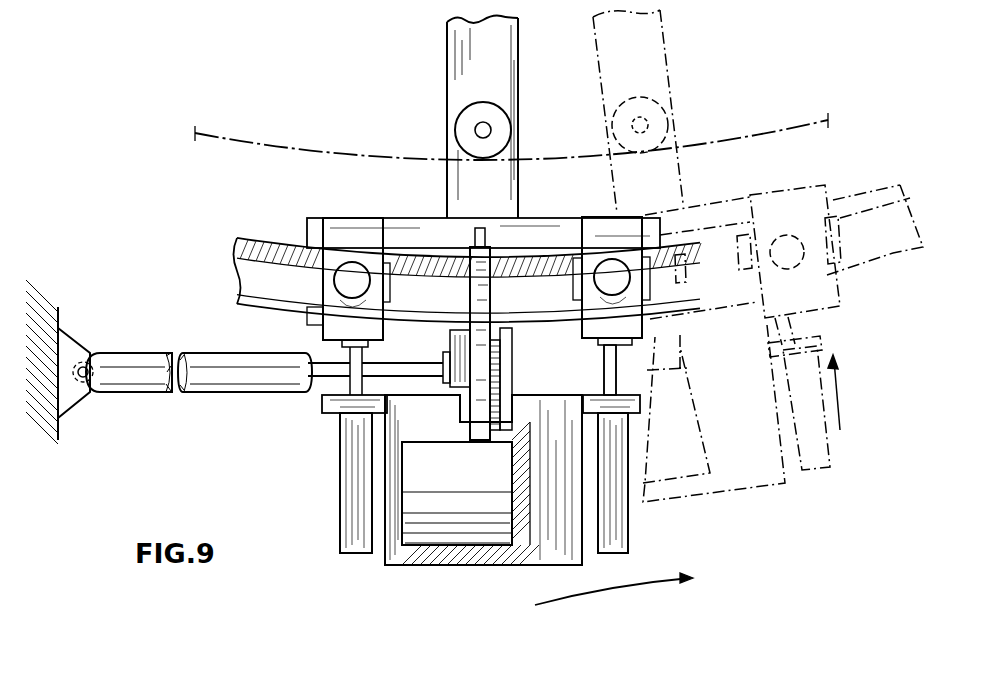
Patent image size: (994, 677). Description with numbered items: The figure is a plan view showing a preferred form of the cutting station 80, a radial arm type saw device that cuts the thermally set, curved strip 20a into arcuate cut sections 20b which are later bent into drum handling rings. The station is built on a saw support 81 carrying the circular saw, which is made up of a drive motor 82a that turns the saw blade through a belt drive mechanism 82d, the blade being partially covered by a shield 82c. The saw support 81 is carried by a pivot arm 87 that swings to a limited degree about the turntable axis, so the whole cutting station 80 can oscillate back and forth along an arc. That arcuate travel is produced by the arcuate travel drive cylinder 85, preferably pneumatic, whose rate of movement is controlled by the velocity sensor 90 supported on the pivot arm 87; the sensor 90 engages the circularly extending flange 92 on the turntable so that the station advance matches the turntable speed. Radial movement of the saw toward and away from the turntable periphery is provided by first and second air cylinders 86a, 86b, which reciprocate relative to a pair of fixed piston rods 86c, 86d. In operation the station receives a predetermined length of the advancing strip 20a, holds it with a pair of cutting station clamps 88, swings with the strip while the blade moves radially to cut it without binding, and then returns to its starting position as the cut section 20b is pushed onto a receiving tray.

The curved strip 20a is at (272, 293).
The arcuate cut section 20b is at (873, 267).
The cutting station 80 is at (381, 578).
The saw support 81 is at (535, 550).
The drive motor 82a is at (438, 533).
The shield 82c is at (478, 300).
The belt drive mechanism 82d is at (491, 493).
The arcuate travel drive cylinder 85 is at (214, 395).
The first air cylinder 86a is at (345, 507).
The second air cylinder 86b is at (620, 528).
The fixed piston rod 86c is at (320, 392).
The fixed piston rod 86d is at (604, 373).
The pivot arm 87 is at (455, 77).
The cutting station clamps 88 is at (353, 264).
The velocity sensor 90 is at (455, 130).
The circularly extending flange 92 is at (285, 138).